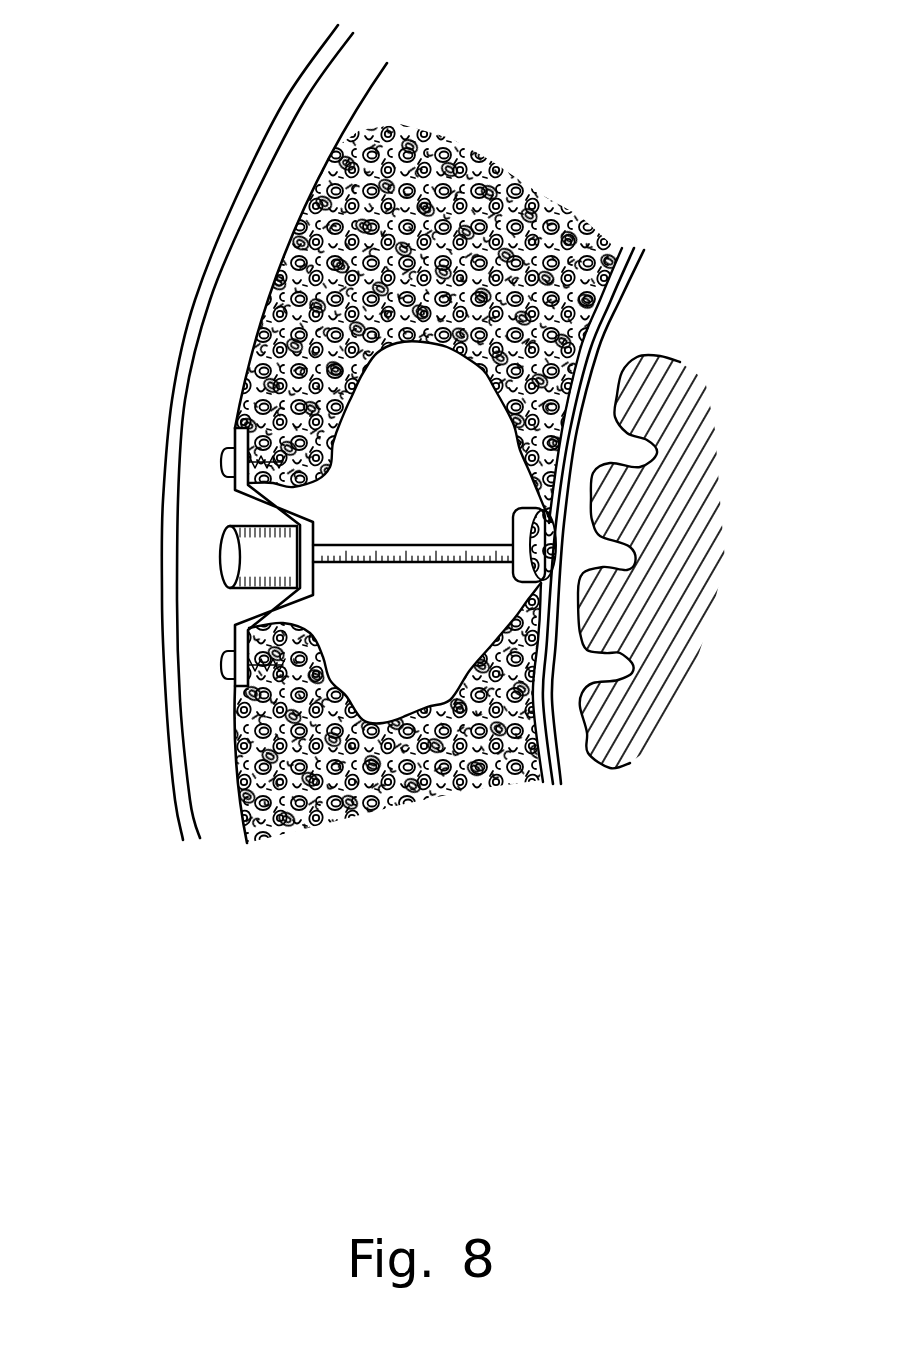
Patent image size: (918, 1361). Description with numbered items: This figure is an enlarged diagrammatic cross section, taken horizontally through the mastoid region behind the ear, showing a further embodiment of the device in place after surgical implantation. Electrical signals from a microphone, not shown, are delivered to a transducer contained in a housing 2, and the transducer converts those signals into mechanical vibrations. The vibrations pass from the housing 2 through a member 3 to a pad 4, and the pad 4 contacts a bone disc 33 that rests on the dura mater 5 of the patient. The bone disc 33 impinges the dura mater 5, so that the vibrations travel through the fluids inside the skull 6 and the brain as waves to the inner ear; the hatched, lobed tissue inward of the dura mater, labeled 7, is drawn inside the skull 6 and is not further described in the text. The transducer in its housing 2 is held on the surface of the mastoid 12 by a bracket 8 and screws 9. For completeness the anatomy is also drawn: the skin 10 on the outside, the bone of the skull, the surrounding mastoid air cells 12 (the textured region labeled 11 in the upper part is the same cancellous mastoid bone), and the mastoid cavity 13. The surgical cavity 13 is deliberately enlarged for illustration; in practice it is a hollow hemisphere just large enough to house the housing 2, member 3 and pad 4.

The housing 2 is at (217, 598).
The member 3 is at (442, 574).
The pad 4 is at (514, 501).
The dura mater 5 is at (560, 723).
The skull 6 is at (620, 352).
The brain 7 is at (655, 565).
The bracket 8 is at (226, 494).
The screws 9 is at (216, 461).
The skin 10 is at (200, 275).
The cancellous bone 11 is at (370, 147).
The mastoid air cells 12 is at (263, 752).
The mastoid cavity 13 is at (420, 388).
The bone disc 33 is at (563, 531).